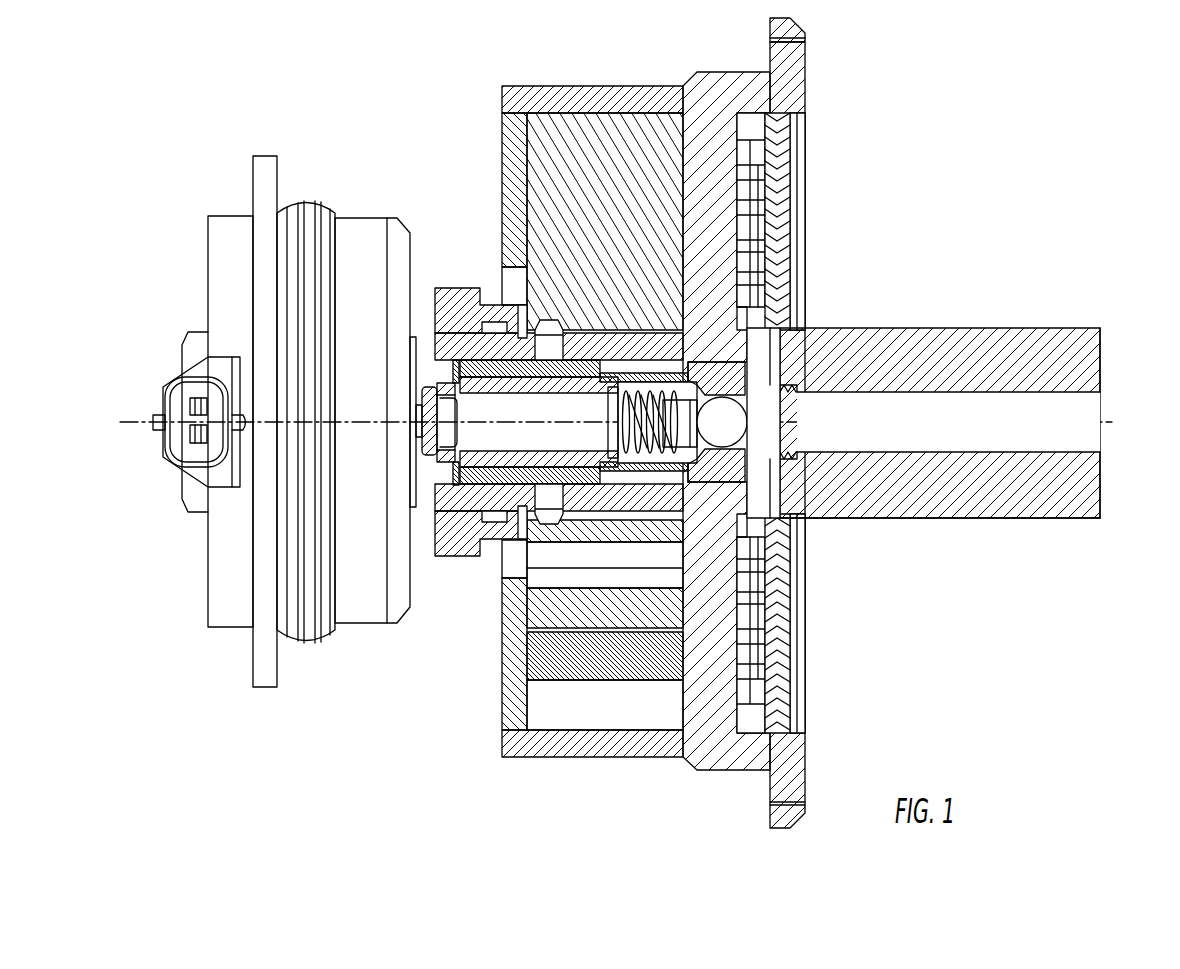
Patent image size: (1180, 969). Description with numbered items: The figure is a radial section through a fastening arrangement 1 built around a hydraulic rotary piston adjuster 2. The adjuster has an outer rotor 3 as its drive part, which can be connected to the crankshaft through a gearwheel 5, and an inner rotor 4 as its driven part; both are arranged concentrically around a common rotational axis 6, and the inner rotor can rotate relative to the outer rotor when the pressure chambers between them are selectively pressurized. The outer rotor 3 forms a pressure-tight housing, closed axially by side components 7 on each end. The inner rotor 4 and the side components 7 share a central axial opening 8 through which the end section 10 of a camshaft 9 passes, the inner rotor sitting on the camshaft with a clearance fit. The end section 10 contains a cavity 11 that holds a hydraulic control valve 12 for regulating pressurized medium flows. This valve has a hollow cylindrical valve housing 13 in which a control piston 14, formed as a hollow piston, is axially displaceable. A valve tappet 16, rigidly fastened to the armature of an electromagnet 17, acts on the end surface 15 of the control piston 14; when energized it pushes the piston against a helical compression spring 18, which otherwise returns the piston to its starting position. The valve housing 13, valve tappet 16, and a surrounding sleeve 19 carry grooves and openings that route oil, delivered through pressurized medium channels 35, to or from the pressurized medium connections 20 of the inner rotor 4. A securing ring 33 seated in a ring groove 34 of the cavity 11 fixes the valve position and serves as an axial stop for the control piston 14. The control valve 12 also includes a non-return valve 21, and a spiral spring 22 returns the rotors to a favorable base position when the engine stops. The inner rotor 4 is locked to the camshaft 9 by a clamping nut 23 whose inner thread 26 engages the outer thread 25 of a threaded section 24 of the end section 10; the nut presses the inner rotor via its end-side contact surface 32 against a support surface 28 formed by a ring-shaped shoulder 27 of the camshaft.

The fastening arrangement 1 is at (175, 133).
The hydraulic rotary piston adjuster 2 is at (634, 395).
The outer rotor 3 is at (807, 93).
The inner rotor 4 is at (580, 137).
The gearwheel 5 is at (802, 22).
The rotational axis 6 is at (1102, 415).
The side components 7 is at (506, 86).
The central axial opening 8 is at (652, 530).
The camshaft 9 is at (1052, 522).
The end section 10 is at (598, 560).
The cavity 11 is at (780, 333).
The hydraulic control valve 12 is at (547, 490).
The valve housing 13 is at (490, 478).
The control piston 14 is at (430, 500).
The end surface 15 is at (316, 300).
The valve tappet 16 is at (422, 425).
The electromagnet 17 is at (228, 275).
The helical compression spring 18 is at (797, 715).
The sleeve 19 is at (540, 545).
The pressurized medium connections 20 is at (625, 320).
The non-return valve 21 is at (733, 432).
The spiral spring 22 is at (786, 600).
The clamping nut 23 is at (455, 290).
The threaded section 24 is at (472, 305).
The outer thread 25 is at (447, 339).
The inner thread 26 is at (440, 288).
The ring-shaped shoulder 27 is at (745, 307).
The support surface 28 is at (670, 300).
The end-side contact surface 32 is at (531, 320).
The securing ring 33 is at (456, 372).
The ring groove 34 is at (437, 390).
The pressurized medium channels 35 is at (1020, 410).